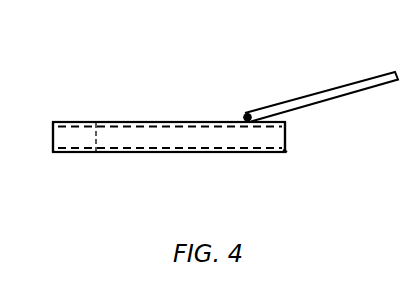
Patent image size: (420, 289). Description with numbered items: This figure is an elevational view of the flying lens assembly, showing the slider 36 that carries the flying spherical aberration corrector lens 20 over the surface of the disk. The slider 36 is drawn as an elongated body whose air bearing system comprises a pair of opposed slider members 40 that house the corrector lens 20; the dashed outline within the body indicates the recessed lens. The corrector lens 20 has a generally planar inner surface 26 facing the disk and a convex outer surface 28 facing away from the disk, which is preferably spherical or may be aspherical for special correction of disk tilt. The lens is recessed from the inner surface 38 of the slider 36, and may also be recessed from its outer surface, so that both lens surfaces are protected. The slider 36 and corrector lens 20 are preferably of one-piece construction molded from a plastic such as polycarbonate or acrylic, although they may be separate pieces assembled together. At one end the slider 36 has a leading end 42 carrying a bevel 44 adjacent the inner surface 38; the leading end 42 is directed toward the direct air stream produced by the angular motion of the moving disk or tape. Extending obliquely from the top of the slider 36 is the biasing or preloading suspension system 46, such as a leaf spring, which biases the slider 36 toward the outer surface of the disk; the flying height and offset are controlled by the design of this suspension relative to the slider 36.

The flying spherical aberration corrector lens 20 is at (103, 122).
The convex outer surface 28 is at (112, 122).
The slider members 40 is at (108, 153).
The planar inner surface 26 is at (72, 153).
The inner surface 38 is at (245, 153).
The leading end 42 is at (286, 139).
The bevel 44 is at (287, 153).
The suspension system 46 is at (386, 72).
The slider 36 is at (298, 126).